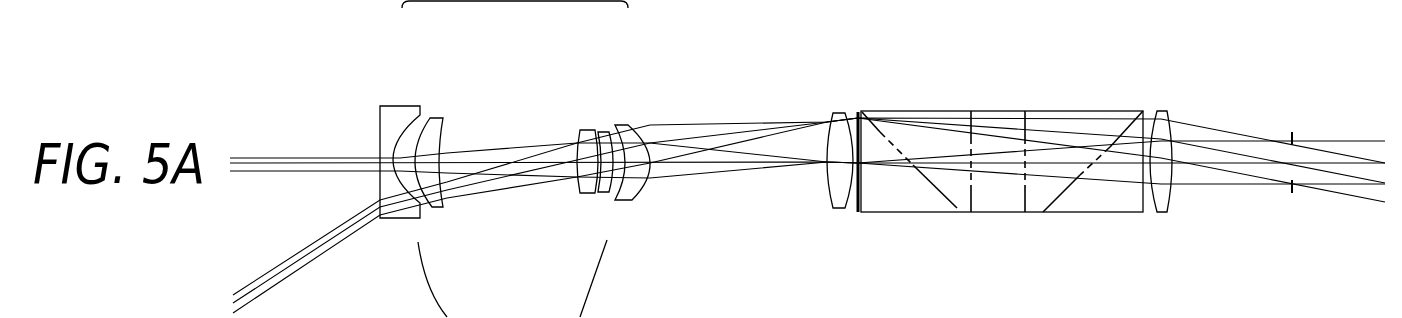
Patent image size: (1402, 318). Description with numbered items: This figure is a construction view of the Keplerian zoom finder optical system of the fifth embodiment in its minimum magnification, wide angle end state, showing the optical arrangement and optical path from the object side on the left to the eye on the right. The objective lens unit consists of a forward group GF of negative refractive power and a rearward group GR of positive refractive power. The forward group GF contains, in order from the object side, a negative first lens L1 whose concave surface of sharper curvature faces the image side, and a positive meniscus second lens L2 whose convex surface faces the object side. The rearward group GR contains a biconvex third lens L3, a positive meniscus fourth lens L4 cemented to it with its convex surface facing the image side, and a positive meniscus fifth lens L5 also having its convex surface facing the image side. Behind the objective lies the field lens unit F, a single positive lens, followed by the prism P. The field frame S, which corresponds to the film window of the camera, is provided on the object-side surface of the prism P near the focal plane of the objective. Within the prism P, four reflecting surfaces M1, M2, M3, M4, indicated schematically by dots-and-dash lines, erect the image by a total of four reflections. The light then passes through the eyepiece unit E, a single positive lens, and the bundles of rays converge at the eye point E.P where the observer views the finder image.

The forward group GF is at (463, 54).
The rearward group GR is at (665, 54).
The first lens L1 is at (403, 105).
The second lens L2 is at (438, 117).
The third lens L3 is at (582, 128).
The fourth lens L4 is at (607, 131).
The fifth lens L5 is at (620, 125).
The field lens unit F is at (860, 84).
The field frame S is at (855, 205).
The prism P is at (1147, 84).
The first reflecting surface M1 is at (938, 190).
The second reflecting surface M2 is at (977, 190).
The third reflecting surface M3 is at (1023, 190).
The fourth reflecting surface M4 is at (1068, 188).
The eyepiece unit E is at (1177, 84).
The eye point E.P is at (1292, 158).